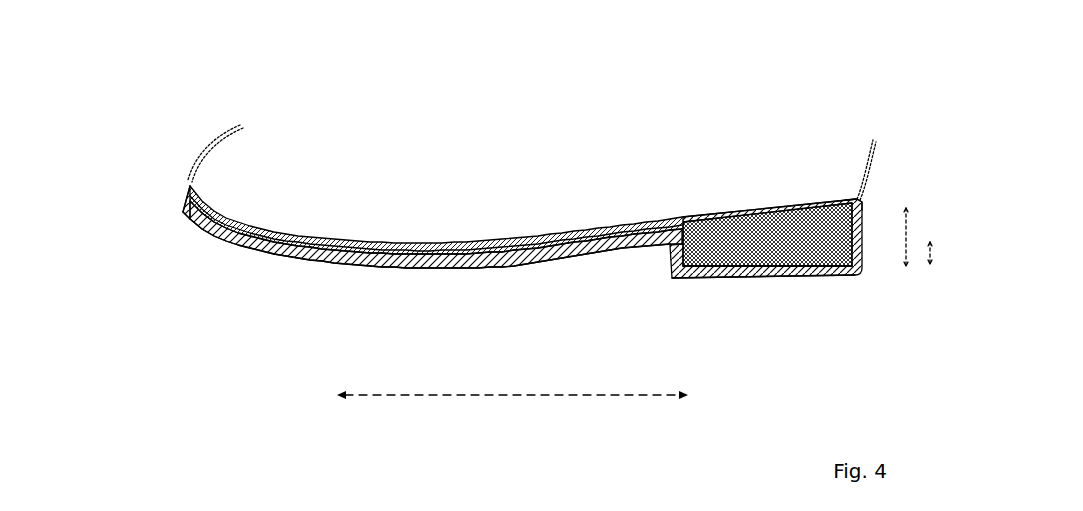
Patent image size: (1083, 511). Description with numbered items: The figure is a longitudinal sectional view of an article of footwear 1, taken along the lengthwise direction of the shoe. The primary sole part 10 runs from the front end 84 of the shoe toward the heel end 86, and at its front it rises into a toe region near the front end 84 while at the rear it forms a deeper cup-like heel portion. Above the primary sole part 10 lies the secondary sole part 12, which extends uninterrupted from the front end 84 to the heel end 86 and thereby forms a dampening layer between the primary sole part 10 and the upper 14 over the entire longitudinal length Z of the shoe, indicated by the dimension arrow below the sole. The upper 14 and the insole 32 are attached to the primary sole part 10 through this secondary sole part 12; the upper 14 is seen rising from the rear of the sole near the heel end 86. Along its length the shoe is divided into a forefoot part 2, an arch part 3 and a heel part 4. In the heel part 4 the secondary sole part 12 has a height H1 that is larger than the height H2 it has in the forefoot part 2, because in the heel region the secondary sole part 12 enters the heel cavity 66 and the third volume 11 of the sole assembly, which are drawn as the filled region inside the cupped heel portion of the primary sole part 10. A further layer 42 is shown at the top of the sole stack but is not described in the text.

The article of footwear 1 is at (822, 90).
The forefoot part 2 is at (250, 243).
The arch part 3 is at (600, 252).
The heel part 4 is at (813, 273).
The primary sole part 10 is at (433, 272).
The third volume 11 is at (788, 232).
The secondary sole part 12 is at (460, 243).
The upper 14 is at (875, 163).
The insole 32 is at (518, 240).
The top layer 42 is at (386, 239).
The heel cavity 66 is at (728, 273).
The front end 84 is at (190, 184).
The heel end 86 is at (862, 203).
The height of the secondary sole part in the heel part H1 is at (907, 258).
The height of the secondary sole part in the forefoot part H2 is at (930, 257).
The longitudinal length Z is at (535, 397).